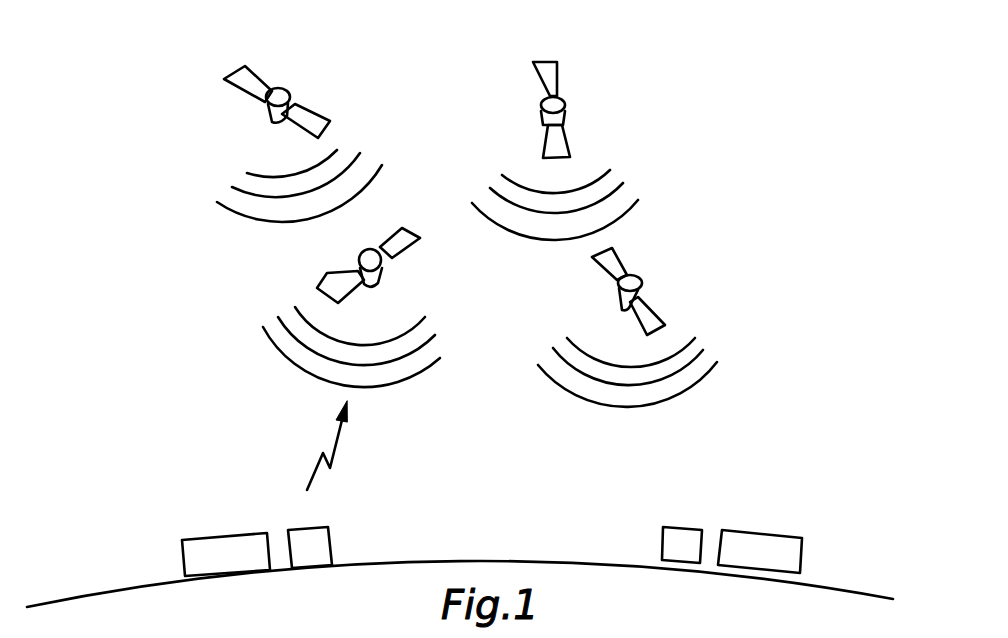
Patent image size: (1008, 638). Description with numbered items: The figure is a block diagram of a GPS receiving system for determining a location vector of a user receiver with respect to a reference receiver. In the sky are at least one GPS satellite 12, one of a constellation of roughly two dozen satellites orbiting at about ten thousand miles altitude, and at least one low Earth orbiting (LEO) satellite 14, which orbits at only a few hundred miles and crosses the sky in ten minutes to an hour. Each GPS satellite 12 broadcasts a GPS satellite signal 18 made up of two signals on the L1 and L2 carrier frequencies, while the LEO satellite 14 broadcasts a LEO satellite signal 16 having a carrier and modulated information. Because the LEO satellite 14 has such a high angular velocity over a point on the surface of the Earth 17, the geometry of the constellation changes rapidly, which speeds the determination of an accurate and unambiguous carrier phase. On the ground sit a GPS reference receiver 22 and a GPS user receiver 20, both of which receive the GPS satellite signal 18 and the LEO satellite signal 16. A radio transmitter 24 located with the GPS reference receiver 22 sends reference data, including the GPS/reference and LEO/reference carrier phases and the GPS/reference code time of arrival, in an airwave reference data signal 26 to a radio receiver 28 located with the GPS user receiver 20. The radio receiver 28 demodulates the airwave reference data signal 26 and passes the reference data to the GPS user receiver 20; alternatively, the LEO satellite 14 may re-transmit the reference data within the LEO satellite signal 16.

The GPS satellite 12 is at (292, 94).
The LEO satellite 14 is at (383, 277).
The LEO satellite signal 16 is at (531, 345).
The surface of the Earth 17 is at (533, 561).
The GPS satellite signal 18 is at (470, 189).
The GPS user receiver 20 is at (770, 530).
The GPS reference receiver 22 is at (215, 538).
The radio transmitter 24 is at (317, 520).
The airwave reference data signal 26 is at (333, 455).
The radio receiver 28 is at (693, 527).